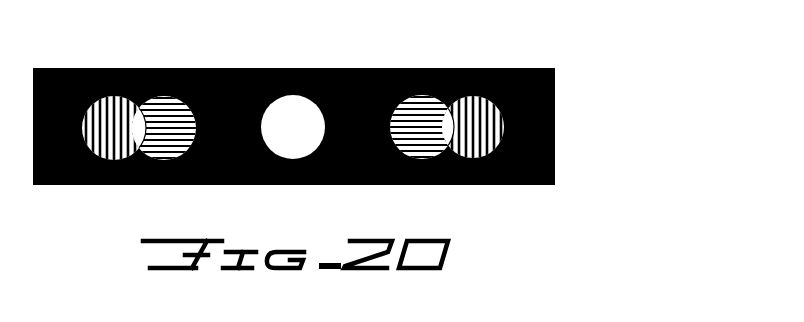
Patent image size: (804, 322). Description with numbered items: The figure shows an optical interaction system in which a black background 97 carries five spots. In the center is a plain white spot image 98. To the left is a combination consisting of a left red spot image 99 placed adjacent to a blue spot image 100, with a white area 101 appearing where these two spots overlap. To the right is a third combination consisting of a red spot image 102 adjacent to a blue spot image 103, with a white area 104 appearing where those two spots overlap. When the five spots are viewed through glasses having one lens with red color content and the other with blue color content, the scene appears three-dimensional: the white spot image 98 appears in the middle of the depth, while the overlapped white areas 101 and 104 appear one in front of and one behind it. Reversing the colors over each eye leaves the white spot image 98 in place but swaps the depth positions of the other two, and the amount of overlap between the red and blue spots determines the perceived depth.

The black background 97 is at (538, 68).
The white spot image 98 is at (293, 150).
The left red spot image 99 is at (112, 154).
The blue spot image 100 is at (173, 154).
The white area 101 is at (138, 142).
The red spot image 102 is at (483, 157).
The blue spot image 103 is at (423, 153).
The white area 104 is at (446, 146).